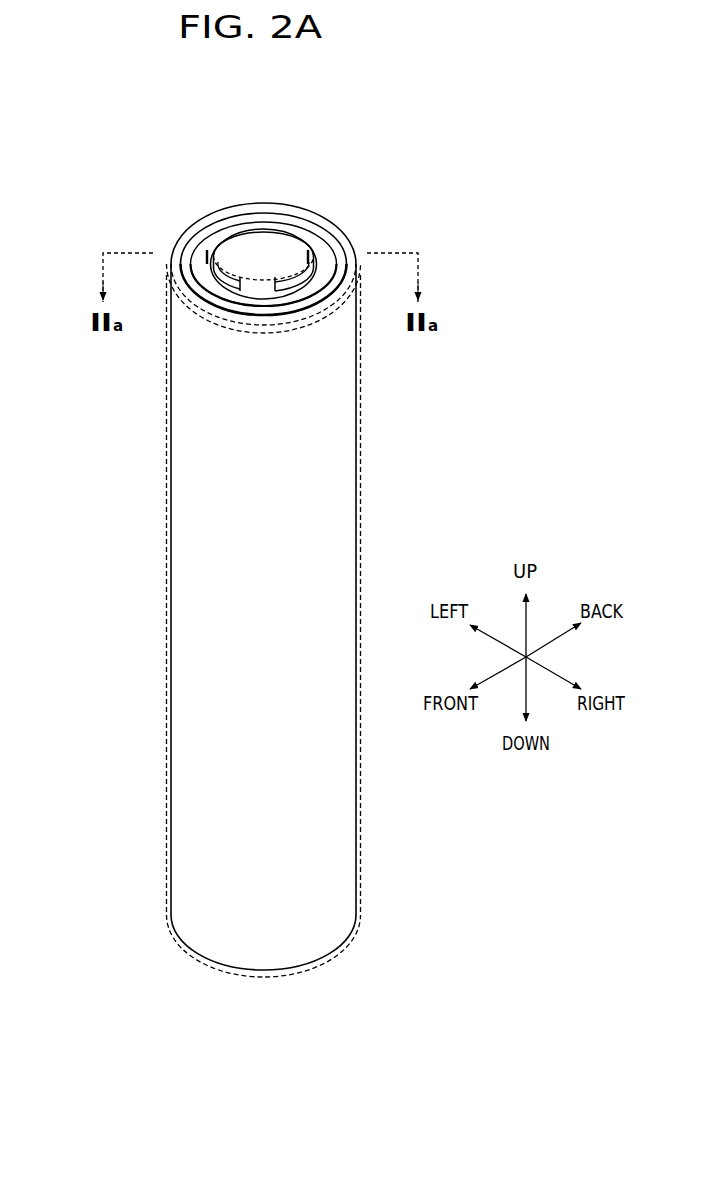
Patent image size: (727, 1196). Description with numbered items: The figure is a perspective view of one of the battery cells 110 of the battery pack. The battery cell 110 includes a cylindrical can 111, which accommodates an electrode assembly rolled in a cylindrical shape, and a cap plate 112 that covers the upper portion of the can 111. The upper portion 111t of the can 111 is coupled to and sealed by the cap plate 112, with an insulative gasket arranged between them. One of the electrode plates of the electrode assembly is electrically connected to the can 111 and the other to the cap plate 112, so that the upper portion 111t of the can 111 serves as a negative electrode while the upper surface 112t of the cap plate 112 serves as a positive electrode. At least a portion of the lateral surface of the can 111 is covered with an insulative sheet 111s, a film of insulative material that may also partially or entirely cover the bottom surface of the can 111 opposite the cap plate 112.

The battery cell 110 is at (79, 163).
The can 111 is at (355, 491).
The upper portion of the can 111t is at (177, 253).
The insulative sheet 111s is at (360, 879).
The cap plate 112 is at (235, 245).
The upper surface of the cap plate 112t is at (277, 238).